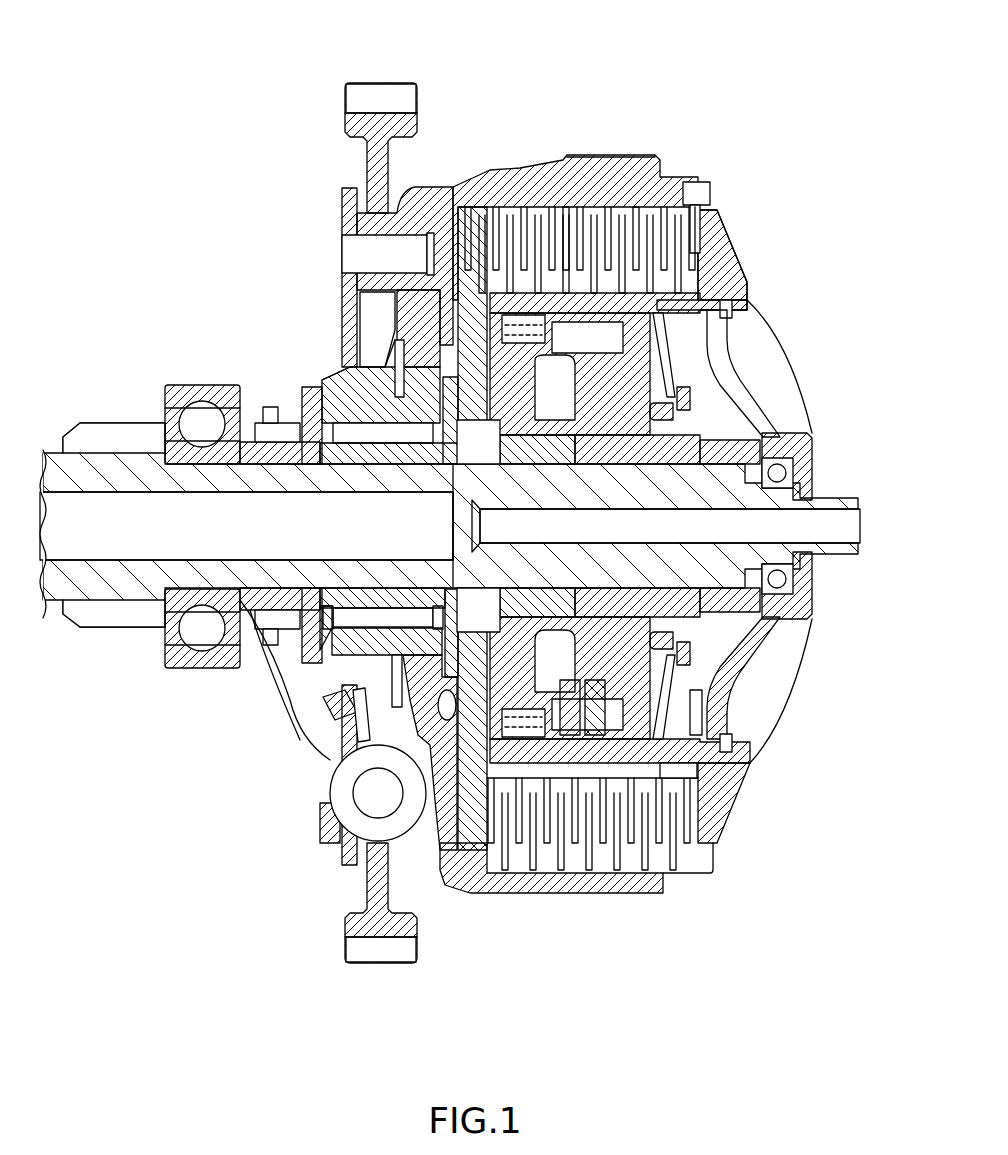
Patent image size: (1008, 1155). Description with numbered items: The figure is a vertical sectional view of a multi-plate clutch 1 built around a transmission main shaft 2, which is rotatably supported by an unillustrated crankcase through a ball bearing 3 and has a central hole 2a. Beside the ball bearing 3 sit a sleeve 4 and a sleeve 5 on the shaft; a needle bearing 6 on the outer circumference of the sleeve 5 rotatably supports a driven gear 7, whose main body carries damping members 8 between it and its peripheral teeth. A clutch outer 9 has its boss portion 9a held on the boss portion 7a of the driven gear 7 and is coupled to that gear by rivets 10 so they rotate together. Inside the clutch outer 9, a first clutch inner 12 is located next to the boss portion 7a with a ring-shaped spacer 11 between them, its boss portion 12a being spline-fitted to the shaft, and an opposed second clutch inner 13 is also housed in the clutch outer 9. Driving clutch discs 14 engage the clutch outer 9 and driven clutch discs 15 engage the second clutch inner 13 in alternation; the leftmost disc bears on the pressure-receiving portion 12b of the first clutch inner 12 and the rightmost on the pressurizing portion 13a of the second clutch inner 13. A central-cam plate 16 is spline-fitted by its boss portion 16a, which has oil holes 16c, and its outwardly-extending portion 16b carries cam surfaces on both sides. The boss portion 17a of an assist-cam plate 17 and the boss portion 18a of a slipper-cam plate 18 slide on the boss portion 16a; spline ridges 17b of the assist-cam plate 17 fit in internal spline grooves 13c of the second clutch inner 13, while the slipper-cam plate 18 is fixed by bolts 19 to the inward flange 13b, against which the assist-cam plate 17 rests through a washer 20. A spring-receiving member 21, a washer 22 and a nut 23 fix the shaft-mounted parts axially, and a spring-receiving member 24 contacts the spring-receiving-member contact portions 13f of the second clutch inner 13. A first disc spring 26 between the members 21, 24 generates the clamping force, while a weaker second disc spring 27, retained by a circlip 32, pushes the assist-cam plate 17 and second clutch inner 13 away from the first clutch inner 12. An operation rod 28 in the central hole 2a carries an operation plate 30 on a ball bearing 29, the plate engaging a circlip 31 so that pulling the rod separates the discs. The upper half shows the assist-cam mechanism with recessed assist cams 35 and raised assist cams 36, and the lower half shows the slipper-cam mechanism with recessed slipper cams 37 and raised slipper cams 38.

The multi-plate clutch 1 is at (181, 86).
The transmission main shaft 2 is at (131, 472).
The central hole 2a is at (88, 517).
The ball bearing 3 is at (202, 418).
The sleeve 4 is at (262, 660).
The sleeve 5 is at (300, 665).
The needle bearing 6 is at (342, 678).
The driven gear 7 is at (365, 100).
The boss portion 7a is at (322, 388).
The damping members 8 is at (363, 820).
The clutch outer 9 is at (423, 205).
The boss portion 9a is at (395, 378).
The rivets 10 is at (380, 248).
The ring-shaped spacer 11 is at (440, 466).
The first clutch inner 12 is at (363, 330).
The boss portion 12a is at (452, 580).
The pressure-receiving portion 12b is at (463, 230).
The second clutch inner 13 is at (750, 290).
The pressurizing portion 13a is at (730, 255).
The inward flange 13b is at (565, 215).
The internal spline grooves 13c is at (450, 300).
The spring-receiving-member contact portions 13f is at (723, 830).
The driving clutch discs 14 is at (600, 215).
The driven clutch discs 15 is at (640, 200).
The central-cam plate 16 is at (640, 440).
The boss portion 16a is at (553, 463).
The outwardly-extending portion 16b is at (600, 347).
The oil holes 16c is at (600, 445).
The assist-cam plate 17 is at (423, 327).
The boss portion 17a is at (513, 470).
The spline ridges 17b is at (433, 290).
The slipper-cam plate 18 is at (700, 410).
The boss portion 18a is at (700, 470).
The bolts 19 is at (696, 180).
The washer 20 is at (517, 225).
The spring-receiving member 21 is at (735, 690).
The washer 22 is at (668, 680).
The nut 23 is at (682, 622).
The spring-receiving member 24 is at (700, 807).
The first disc spring 26 is at (696, 705).
The second disc spring 27 is at (377, 750).
The operation rod 28 is at (826, 510).
The ball bearing 29 is at (780, 582).
The operation plate 30 is at (797, 623).
The circlip 31 is at (735, 745).
The circlip 32 is at (355, 717).
The recessed assist cams 35 is at (560, 385).
The raised assist cams 36 is at (570, 412).
The recessed slipper cams 37 is at (573, 690).
The raised slipper cams 38 is at (587, 677).